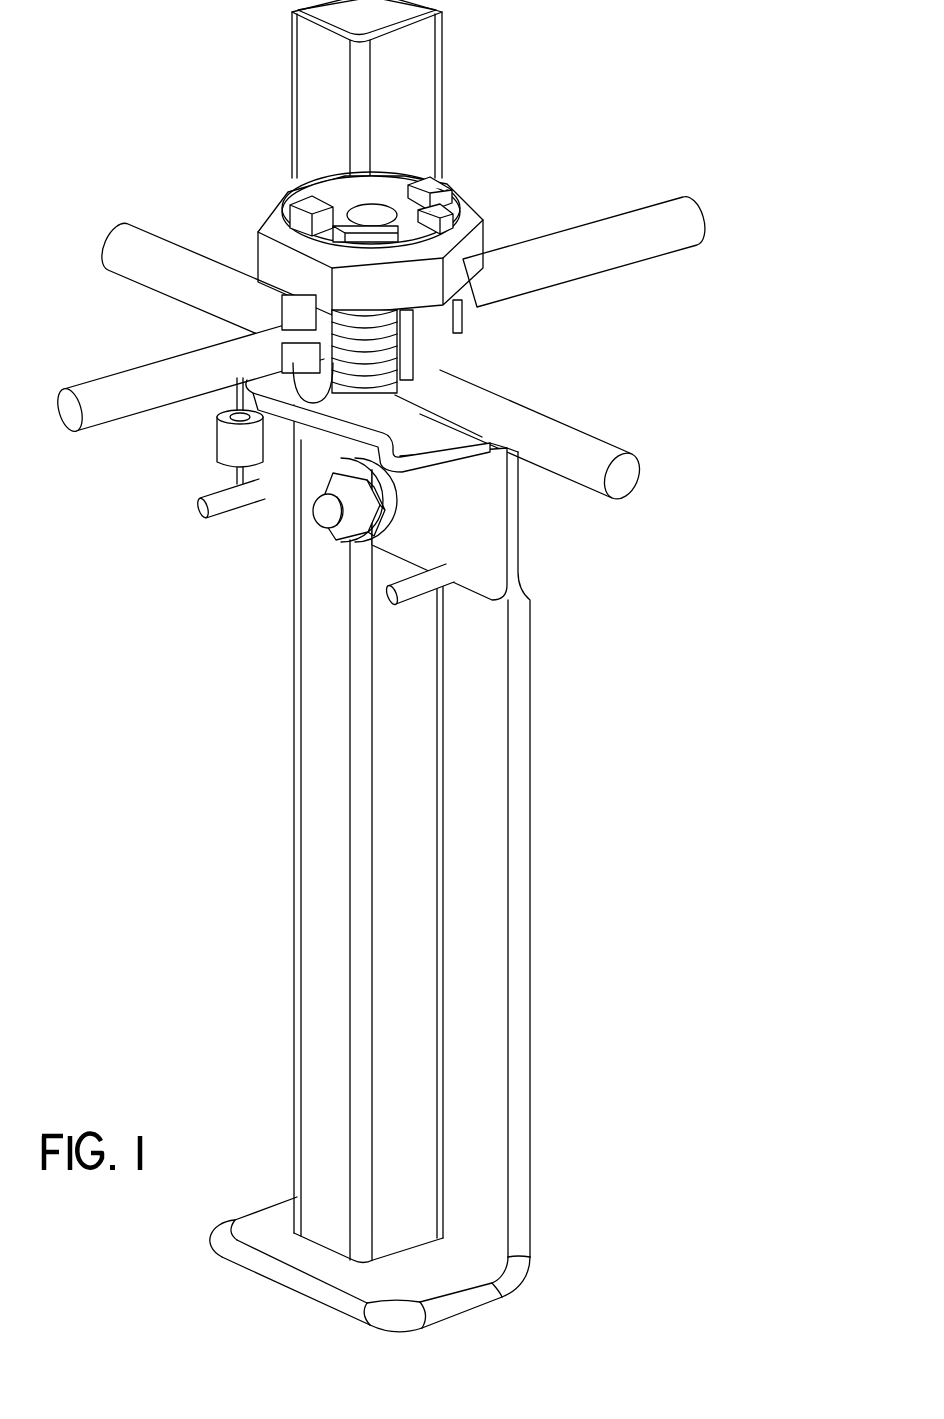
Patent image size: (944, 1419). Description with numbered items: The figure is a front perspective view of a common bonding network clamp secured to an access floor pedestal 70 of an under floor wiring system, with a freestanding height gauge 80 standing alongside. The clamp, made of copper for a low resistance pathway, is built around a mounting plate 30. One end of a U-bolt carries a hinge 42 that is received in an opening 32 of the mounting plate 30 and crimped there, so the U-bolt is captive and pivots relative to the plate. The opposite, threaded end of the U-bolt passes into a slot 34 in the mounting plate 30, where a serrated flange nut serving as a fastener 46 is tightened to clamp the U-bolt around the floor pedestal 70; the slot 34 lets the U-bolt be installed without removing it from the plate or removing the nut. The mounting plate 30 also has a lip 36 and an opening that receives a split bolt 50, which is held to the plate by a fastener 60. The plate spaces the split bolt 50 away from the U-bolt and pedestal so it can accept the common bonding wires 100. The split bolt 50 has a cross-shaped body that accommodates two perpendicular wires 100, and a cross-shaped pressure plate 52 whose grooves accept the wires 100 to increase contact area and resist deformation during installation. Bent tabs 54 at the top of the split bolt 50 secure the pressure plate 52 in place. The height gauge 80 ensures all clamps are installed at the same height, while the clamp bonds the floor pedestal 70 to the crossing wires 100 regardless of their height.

The mounting plate 30 is at (480, 549).
The opening or aperture 32 is at (240, 413).
The slot 34 is at (370, 553).
The lip 36 is at (267, 498).
The hinge 42 is at (213, 452).
The fastener 46 is at (350, 540).
The split bolt 50 is at (473, 217).
The pressure plate 52 is at (462, 317).
The bent tabs 54 is at (448, 187).
The fastener 60 is at (327, 533).
The access floor pedestal 70 is at (297, 922).
The freestanding height gauge 80 is at (517, 1043).
The common bonding wires 100 is at (635, 220).